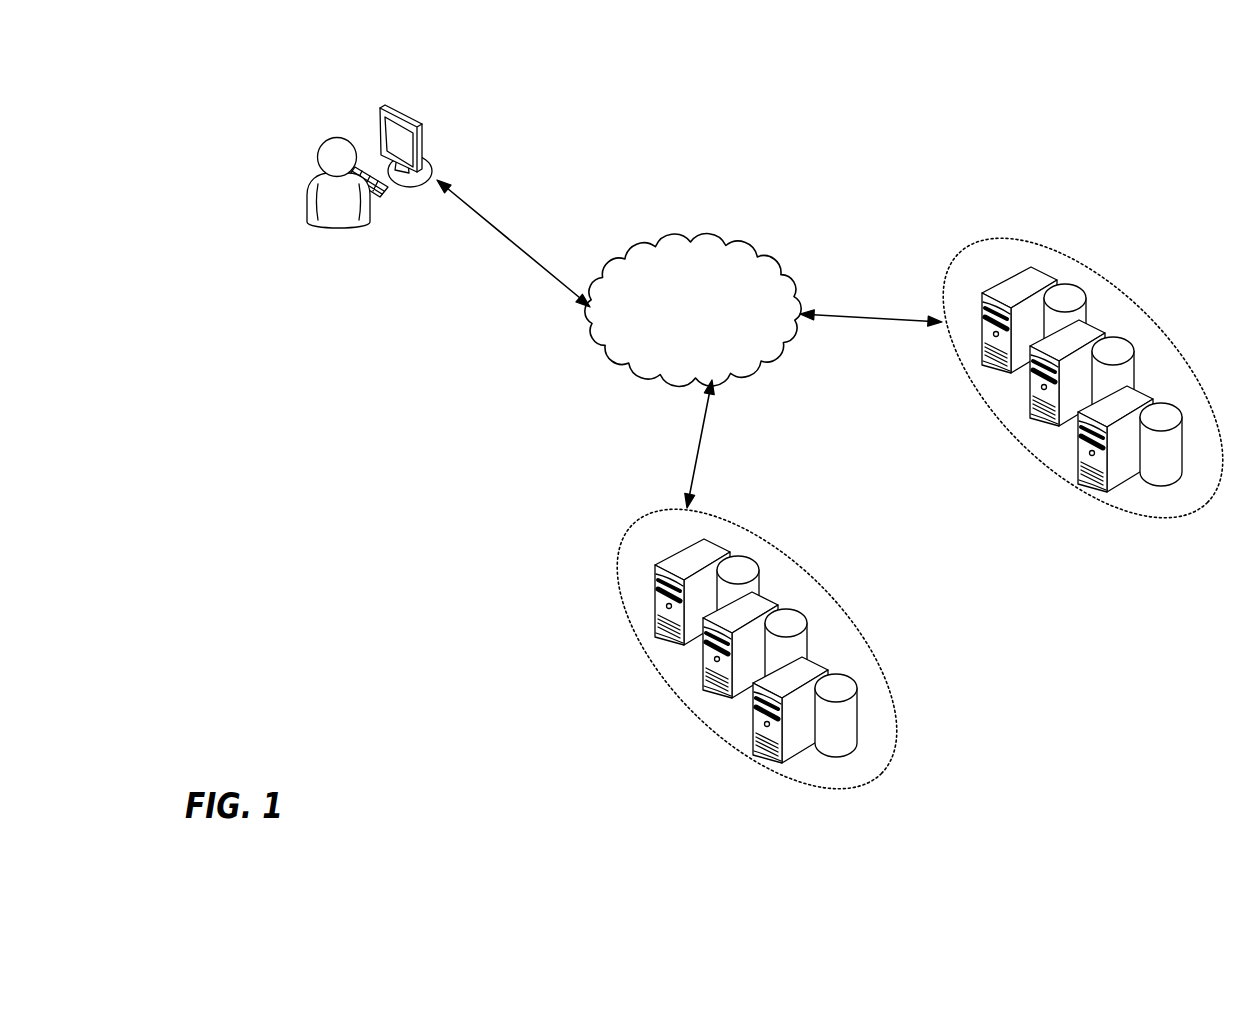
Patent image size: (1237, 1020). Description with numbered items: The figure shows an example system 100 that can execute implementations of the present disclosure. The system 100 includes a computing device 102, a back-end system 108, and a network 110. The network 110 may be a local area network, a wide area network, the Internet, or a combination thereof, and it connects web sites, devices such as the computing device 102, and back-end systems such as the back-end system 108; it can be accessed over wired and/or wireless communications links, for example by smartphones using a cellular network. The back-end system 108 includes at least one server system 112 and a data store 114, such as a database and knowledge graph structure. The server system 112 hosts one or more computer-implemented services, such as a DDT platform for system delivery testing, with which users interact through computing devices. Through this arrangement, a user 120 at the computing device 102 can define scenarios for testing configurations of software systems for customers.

The example system 100 is at (849, 90).
The computing device 102 is at (427, 128).
The back-end system 108 is at (1138, 292).
The network 110 is at (813, 560).
The server system 112 is at (695, 240).
The data store 114 is at (737, 555).
The user 120 is at (307, 195).